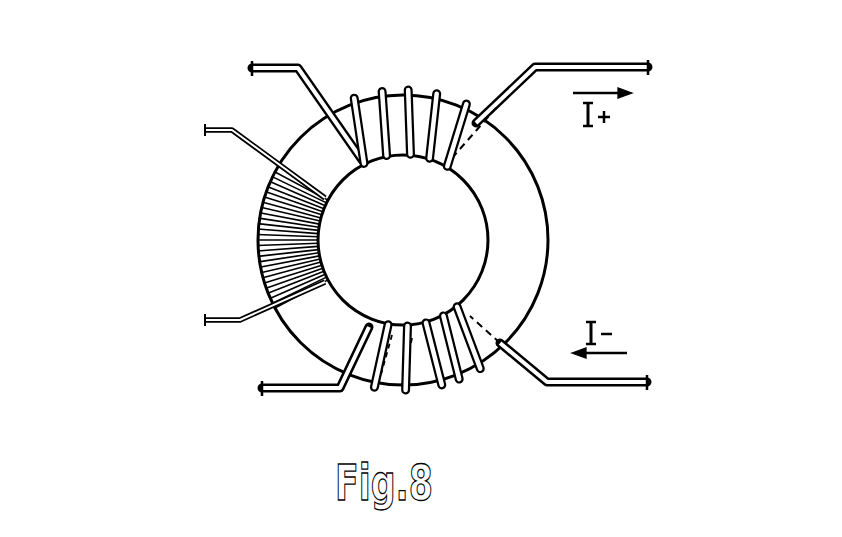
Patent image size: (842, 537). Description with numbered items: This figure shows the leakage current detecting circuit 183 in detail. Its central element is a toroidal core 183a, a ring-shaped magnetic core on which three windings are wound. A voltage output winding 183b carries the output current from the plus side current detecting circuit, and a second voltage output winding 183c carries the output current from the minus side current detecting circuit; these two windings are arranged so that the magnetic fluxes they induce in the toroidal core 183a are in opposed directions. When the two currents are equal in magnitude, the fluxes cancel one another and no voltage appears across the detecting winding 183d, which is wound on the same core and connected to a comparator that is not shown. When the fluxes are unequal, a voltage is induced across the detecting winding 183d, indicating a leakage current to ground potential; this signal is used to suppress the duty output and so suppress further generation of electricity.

The leakage current detecting circuit 183 is at (391, 228).
The toroidal core 183a is at (541, 236).
The voltage output winding 183b is at (632, 75).
The voltage output winding 183c is at (633, 378).
The detecting winding 183d is at (228, 318).